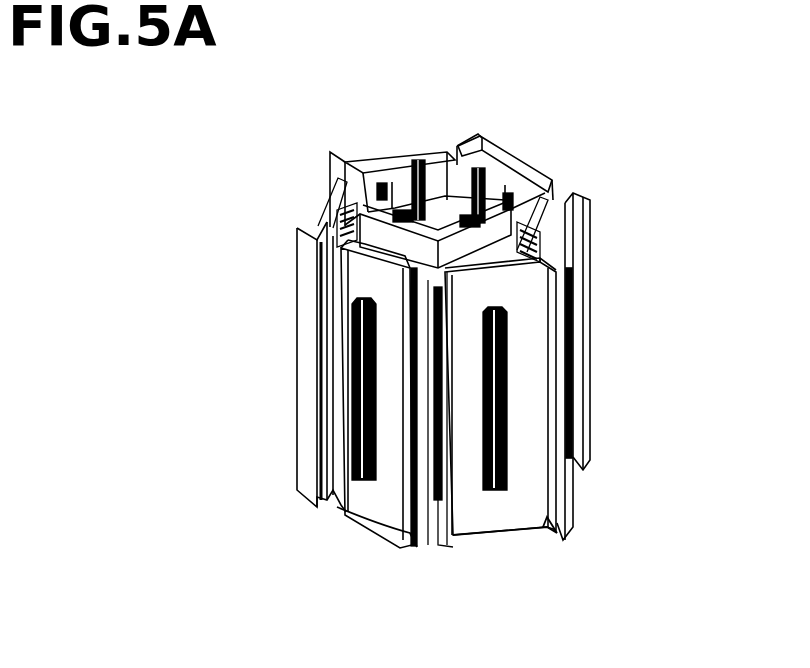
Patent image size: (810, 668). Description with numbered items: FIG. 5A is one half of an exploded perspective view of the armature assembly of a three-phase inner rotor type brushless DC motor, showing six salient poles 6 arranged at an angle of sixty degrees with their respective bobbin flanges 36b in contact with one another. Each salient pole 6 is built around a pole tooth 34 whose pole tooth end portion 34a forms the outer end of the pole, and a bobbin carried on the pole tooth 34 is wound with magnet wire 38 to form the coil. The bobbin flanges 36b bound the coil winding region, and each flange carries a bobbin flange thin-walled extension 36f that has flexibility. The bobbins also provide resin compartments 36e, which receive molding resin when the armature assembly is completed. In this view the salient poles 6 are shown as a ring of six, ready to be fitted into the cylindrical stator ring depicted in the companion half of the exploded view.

The salient pole 6 is at (303, 186).
The magnet wire 38 is at (563, 183).
The resin compartment 36e is at (655, 487).
The pole tooth 34 is at (350, 338).
The pole tooth end portion 34a is at (657, 388).
The bobbin flange 36b is at (597, 577).
The bobbin flange thin-walled extension 36f is at (453, 537).